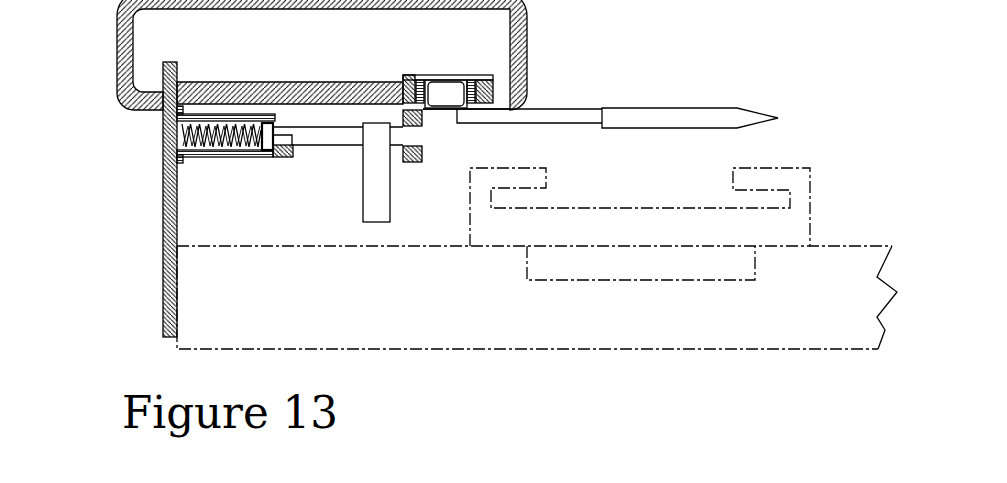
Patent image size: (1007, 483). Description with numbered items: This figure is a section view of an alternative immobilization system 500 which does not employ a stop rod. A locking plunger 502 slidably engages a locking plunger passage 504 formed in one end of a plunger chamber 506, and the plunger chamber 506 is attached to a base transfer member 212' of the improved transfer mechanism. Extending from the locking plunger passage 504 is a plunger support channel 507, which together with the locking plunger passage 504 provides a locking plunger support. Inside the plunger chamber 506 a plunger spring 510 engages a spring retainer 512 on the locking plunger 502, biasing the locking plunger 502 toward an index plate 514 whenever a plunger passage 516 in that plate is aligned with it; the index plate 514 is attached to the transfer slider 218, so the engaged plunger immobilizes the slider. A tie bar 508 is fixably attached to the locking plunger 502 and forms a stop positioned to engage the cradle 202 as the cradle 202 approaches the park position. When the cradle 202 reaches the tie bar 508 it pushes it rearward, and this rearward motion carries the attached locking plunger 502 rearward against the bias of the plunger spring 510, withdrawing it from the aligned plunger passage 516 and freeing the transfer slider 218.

The base transfer member 212' is at (281, 173).
The plunger chamber 506 is at (163, 187).
The plunger spring 510 is at (232, 131).
The locking plunger passage 504 is at (270, 155).
The spring retainer 512 is at (263, 122).
The locking plunger 502 is at (328, 137).
The plunger support channel 507 is at (289, 160).
The tie bar 508 is at (377, 190).
The immobilization system 500 is at (304, 235).
The plunger passage 516 is at (423, 129).
The index plate 514 is at (422, 157).
The transfer slider 218 is at (452, 72).
The cradle 202 is at (793, 182).